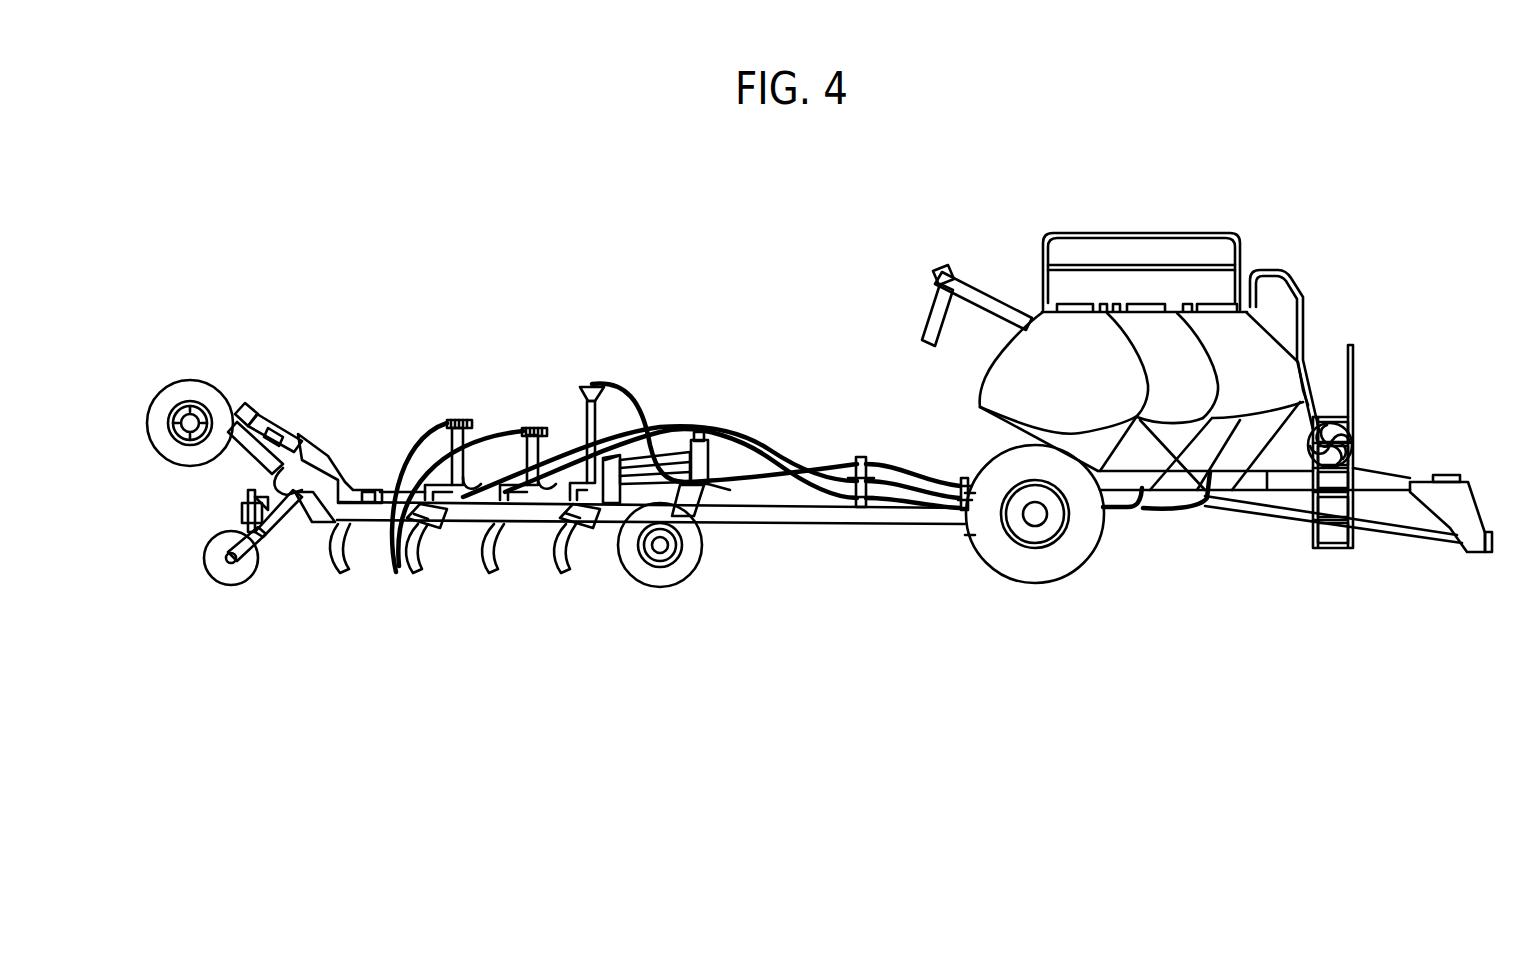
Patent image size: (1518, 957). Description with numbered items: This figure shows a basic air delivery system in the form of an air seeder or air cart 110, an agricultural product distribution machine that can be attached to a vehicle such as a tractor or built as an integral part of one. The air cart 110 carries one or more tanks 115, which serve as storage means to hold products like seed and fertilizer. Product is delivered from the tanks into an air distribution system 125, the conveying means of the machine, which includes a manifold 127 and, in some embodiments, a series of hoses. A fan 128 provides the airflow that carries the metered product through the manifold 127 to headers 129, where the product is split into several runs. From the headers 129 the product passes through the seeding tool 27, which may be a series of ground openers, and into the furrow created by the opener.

The air cart 110 is at (285, 255).
The seeding tool 27 is at (489, 566).
The tank 115 is at (1023, 362).
The air distribution system 125 is at (712, 396).
The manifold 127 is at (884, 508).
The fan 128 is at (1333, 420).
The header 129 is at (585, 385).